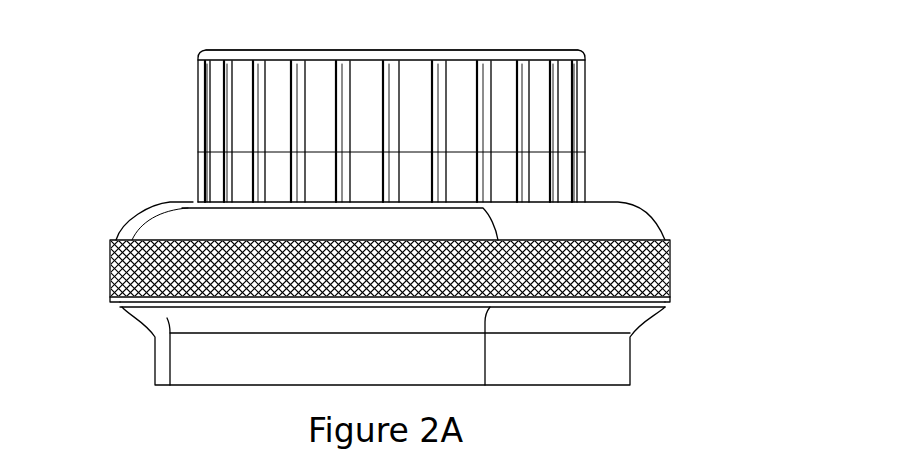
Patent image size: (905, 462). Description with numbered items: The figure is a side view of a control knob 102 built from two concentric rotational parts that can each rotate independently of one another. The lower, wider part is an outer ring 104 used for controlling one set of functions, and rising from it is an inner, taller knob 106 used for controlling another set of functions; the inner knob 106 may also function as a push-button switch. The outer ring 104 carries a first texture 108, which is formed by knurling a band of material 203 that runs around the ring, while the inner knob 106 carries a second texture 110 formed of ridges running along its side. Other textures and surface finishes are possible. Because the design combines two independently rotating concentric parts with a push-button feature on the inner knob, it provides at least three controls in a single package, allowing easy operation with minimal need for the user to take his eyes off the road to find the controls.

The knob 102 is at (728, 130).
The outer ring 104 is at (642, 222).
The inner knob 106 is at (585, 97).
The first texture 108 is at (670, 268).
The second texture 110 is at (333, 88).
The band of material 203 is at (670, 248).